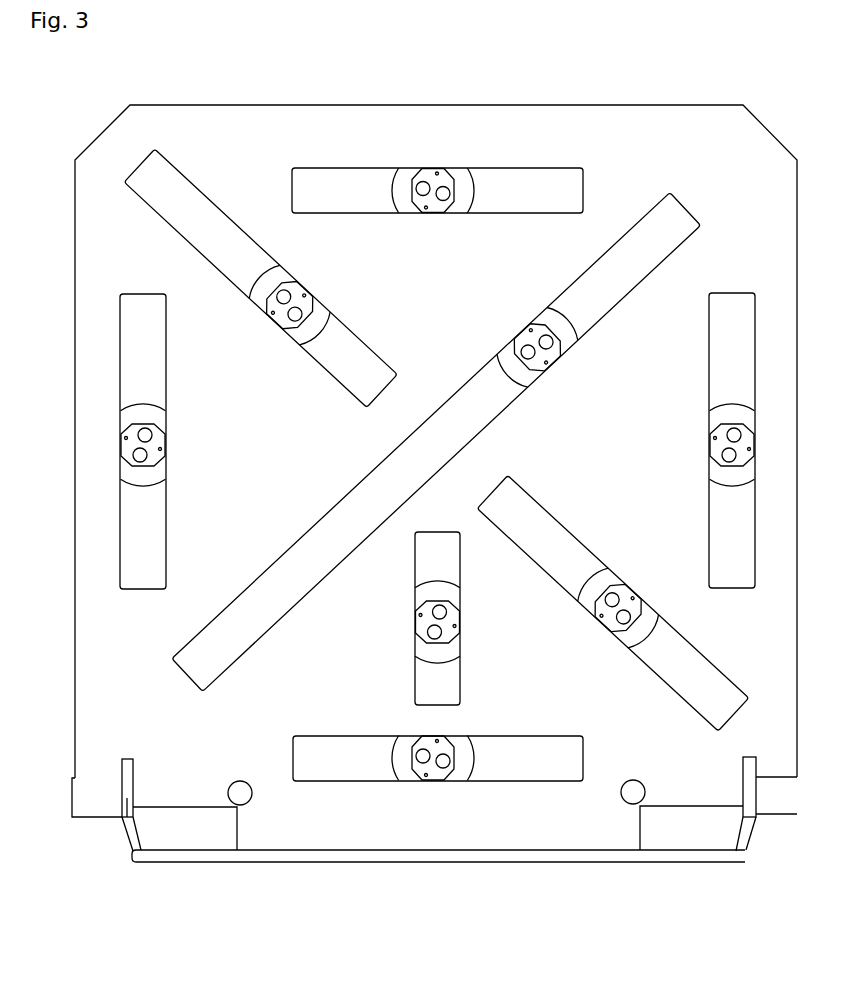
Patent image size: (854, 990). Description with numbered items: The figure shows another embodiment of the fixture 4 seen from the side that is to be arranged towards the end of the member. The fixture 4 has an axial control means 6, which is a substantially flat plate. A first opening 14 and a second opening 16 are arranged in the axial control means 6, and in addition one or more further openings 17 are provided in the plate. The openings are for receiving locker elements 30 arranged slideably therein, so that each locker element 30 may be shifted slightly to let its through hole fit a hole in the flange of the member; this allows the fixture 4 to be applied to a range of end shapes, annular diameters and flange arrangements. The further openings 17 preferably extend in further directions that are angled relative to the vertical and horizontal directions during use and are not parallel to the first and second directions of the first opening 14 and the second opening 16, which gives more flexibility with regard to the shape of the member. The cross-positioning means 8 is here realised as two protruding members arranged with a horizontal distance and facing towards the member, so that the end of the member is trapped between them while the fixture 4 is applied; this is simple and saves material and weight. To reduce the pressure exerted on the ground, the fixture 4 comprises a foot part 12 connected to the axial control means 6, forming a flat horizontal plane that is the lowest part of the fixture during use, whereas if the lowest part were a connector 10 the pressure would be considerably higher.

The fixture 4 is at (157, 873).
The axial control means 6 is at (340, 671).
The cross-positioning means 8 is at (625, 800).
The connector 10 is at (783, 788).
The foot part 12 is at (553, 850).
The first opening 14 is at (340, 753).
The second opening 16 is at (153, 346).
The further openings 17 is at (530, 515).
The locker element 30 is at (457, 750).